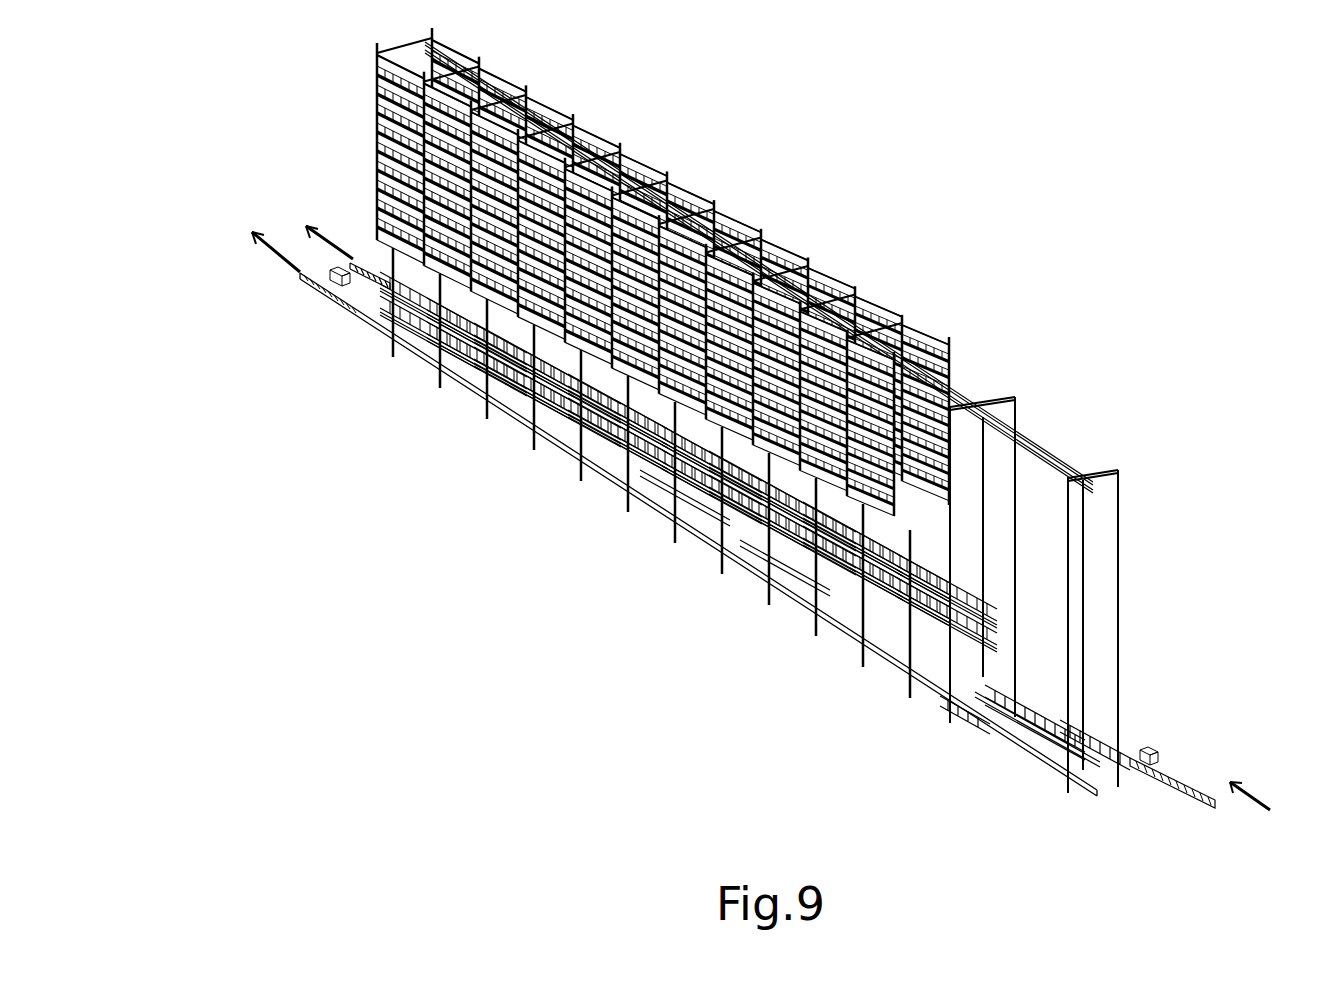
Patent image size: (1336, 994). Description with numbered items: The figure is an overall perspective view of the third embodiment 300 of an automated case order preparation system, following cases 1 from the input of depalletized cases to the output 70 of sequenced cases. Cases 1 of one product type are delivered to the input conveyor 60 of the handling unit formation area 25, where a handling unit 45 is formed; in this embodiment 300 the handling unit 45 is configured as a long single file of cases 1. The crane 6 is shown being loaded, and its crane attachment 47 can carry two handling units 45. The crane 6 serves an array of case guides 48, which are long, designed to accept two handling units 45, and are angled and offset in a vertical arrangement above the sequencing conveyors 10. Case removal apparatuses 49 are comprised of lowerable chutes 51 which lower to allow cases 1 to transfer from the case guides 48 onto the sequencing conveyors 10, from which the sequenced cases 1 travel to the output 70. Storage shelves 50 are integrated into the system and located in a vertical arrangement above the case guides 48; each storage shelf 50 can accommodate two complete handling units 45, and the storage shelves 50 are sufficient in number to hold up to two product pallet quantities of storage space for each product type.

The storage shelves 50 is at (410, 78).
The cases 1 is at (378, 160).
The output 70 is at (276, 212).
The sequencing conveyors 10 is at (342, 316).
The case guides 48 is at (560, 407).
The lowerable chutes 51 is at (673, 498).
The case removal apparatuses 49 is at (765, 578).
The crane 6 is at (1136, 628).
The handling unit formation area 25 is at (1147, 685).
The input conveyor 60 is at (1286, 765).
The crane attachment 47 is at (965, 705).
The handling unit 45 is at (1017, 719).
The third embodiment 300 is at (332, 725).